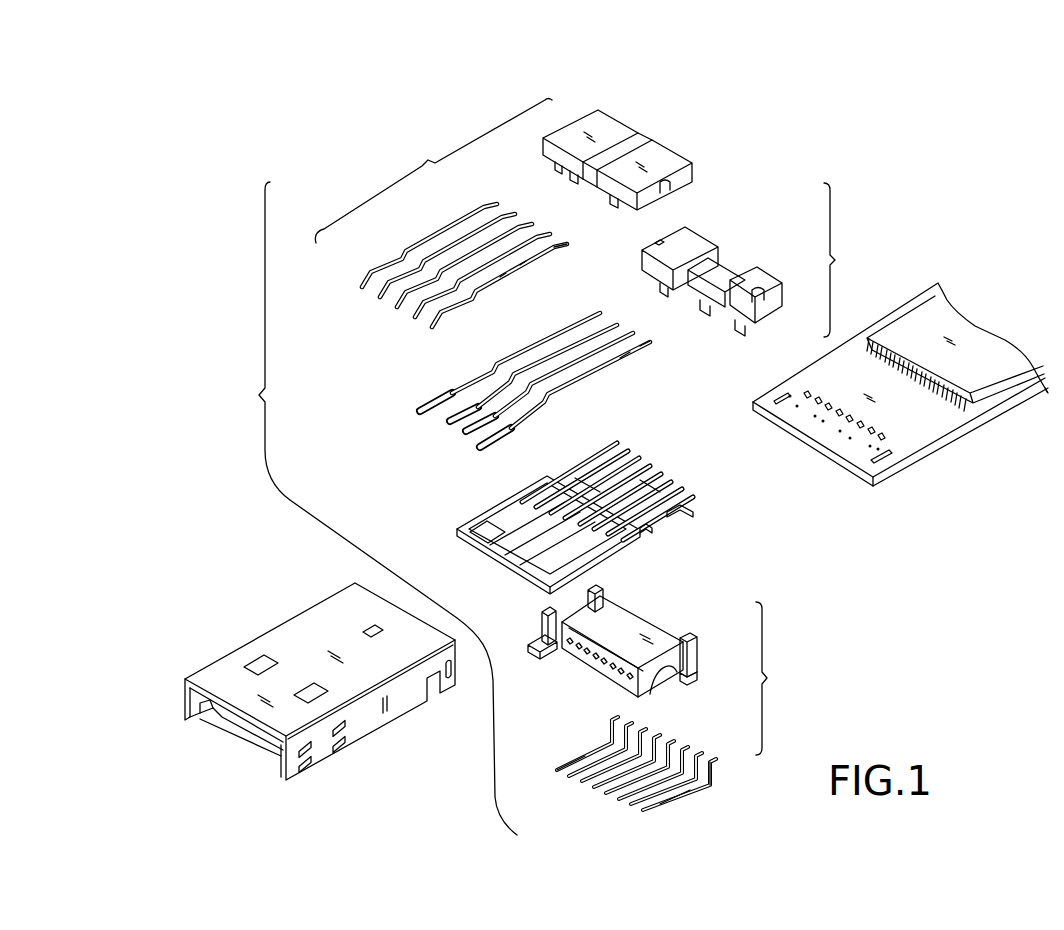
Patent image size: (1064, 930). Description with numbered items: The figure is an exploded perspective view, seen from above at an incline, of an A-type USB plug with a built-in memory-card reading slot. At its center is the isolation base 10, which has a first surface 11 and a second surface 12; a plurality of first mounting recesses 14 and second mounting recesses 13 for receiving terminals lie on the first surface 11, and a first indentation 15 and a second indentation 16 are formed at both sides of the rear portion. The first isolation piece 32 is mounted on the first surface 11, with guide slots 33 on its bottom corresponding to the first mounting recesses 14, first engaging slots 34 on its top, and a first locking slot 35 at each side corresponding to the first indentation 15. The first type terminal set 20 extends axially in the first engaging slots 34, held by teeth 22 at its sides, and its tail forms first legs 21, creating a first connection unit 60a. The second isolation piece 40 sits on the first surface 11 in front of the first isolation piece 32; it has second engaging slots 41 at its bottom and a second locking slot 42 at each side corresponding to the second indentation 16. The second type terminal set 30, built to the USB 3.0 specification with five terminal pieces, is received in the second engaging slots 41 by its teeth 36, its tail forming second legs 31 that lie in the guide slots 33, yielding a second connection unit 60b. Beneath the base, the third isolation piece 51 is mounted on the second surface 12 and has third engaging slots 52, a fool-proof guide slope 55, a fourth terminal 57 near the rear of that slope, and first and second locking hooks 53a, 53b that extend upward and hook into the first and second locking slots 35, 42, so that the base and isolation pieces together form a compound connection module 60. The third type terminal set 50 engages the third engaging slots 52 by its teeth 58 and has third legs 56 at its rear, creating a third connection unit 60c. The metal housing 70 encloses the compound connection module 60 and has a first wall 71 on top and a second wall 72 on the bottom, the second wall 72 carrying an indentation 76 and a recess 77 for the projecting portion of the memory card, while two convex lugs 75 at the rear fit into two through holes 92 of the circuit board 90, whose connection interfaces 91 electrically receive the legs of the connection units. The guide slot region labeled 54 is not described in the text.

The isolation base 10 is at (577, 518).
The first surface 11 is at (519, 555).
The second surface 12 is at (475, 549).
The second mounting recesses 13 is at (527, 500).
The first mounting recesses 14 is at (486, 512).
The first indentation 15 is at (690, 509).
The second indentation 16 is at (653, 530).
The first type terminal set 20 is at (557, 380).
The first legs 21 is at (650, 339).
The teeth 22 is at (628, 353).
The second type terminal set 30 is at (468, 265).
The second legs 31 is at (566, 243).
The first isolation piece 32 is at (725, 284).
The guide slots 33 is at (720, 314).
The first engaging slots 34 is at (745, 270).
The first locking slot 35 is at (760, 299).
The teeth 36 is at (503, 278).
The second isolation piece 40 is at (603, 160).
The second engaging slots 41 is at (602, 198).
The second locking slot 42 is at (671, 190).
The third type terminal set 50 is at (632, 769).
The third isolation piece 51 is at (640, 630).
The third engaging slots 52 is at (641, 652).
The first locking hook 53a is at (698, 647).
The second locking hook 53b is at (698, 676).
The passageway 54 is at (600, 664).
The fool-proof guide slope 55 is at (540, 660).
The third legs 56 is at (708, 780).
The fourth terminal 57 is at (583, 767).
The teeth 58 is at (694, 787).
The compound connection module 60 is at (375, 508).
The first connection unit 60a is at (850, 260).
The second connection unit 60b is at (433, 171).
The third connection unit 60c is at (782, 678).
The metal housing 70 is at (318, 686).
The first wall 71 is at (220, 672).
The second wall 72 is at (277, 744).
The convex lugs 75 is at (447, 688).
The indentation 76 is at (198, 716).
The recess 77 is at (240, 725).
The circuit board 90 is at (900, 392).
The connection interfaces 91 is at (860, 440).
The through holes 92 is at (893, 442).